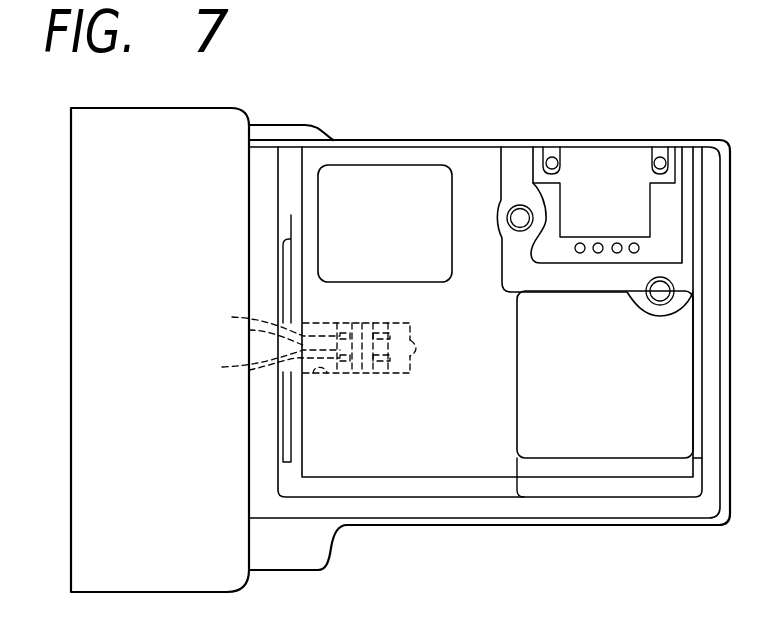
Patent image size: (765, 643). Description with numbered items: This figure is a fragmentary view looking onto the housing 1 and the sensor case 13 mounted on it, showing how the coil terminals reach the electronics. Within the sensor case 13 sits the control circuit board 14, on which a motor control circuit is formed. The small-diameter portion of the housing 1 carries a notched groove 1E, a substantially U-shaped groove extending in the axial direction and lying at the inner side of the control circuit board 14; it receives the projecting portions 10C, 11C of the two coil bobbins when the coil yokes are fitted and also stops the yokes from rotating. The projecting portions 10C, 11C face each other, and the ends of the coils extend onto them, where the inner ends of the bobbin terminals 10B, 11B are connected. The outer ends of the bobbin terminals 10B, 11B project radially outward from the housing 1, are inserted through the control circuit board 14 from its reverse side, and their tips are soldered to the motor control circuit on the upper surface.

The housing 1 is at (83, 272).
The notched groove 1E is at (330, 380).
The bobbin terminal 10B is at (410, 357).
The projecting portion 10C is at (405, 328).
The bobbin terminal 11B is at (258, 369).
The projecting portion 11C is at (264, 321).
The sensor case 13 is at (612, 138).
The control circuit board 14 is at (465, 157).